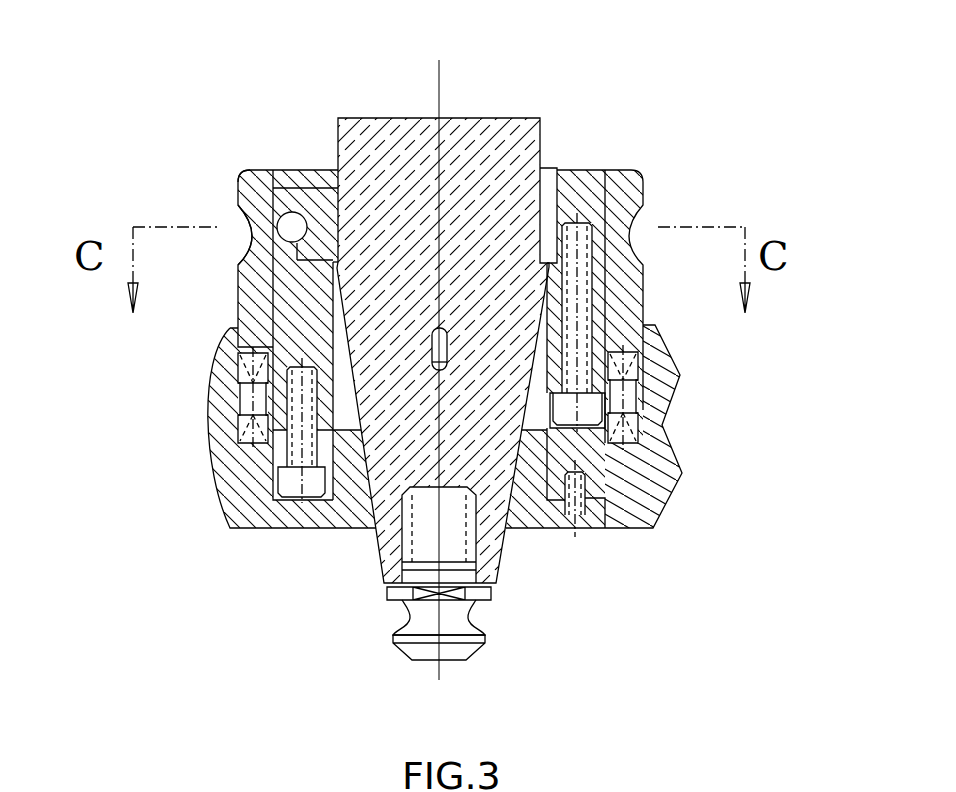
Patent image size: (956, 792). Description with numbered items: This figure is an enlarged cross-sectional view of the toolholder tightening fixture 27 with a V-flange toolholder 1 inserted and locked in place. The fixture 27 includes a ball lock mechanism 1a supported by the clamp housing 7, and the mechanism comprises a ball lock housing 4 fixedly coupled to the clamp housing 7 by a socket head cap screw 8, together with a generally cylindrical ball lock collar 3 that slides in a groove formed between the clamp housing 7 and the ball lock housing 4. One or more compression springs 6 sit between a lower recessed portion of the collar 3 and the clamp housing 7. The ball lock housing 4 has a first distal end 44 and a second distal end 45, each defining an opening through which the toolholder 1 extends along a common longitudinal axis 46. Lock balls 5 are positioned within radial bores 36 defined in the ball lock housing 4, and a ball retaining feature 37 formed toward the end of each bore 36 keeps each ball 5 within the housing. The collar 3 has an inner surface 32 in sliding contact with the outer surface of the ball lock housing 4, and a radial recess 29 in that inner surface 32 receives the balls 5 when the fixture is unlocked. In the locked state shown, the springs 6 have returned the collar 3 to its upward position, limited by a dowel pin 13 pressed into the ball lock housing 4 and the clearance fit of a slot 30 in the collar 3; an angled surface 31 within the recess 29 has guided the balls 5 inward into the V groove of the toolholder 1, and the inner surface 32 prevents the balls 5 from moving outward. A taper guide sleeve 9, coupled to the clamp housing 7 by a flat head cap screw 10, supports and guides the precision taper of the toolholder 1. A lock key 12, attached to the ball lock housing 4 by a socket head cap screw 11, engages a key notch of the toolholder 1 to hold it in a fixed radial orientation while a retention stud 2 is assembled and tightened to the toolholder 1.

The V-flange toolholder 1 is at (460, 128).
The ball lock mechanism 1a is at (238, 175).
The retention stud 2 is at (405, 647).
The ball lock collar 3 is at (632, 183).
The ball lock housing 4 is at (290, 196).
The lock balls 5 is at (290, 227).
The compression springs 6 is at (255, 394).
The clamp housing 7 is at (225, 483).
The socket head cap screw 8 is at (297, 487).
The taper guide sleeve 9 is at (308, 520).
The flat head cap screw 10 is at (582, 520).
The socket head cap screw 11 is at (585, 408).
The lock key 12 is at (580, 183).
The dowel pin 13 is at (500, 318).
The toolholder tightening fixture 27 is at (133, 110).
The radial recess 29 is at (268, 195).
The slot 30 is at (447, 325).
The angled surface 31 is at (267, 214).
The inner surface 32 is at (283, 242).
The radial bores 36 is at (290, 210).
The ball retaining feature 37 is at (300, 212).
The first distal end 44 is at (288, 170).
The second distal end 45 is at (366, 500).
The longitudinal axis 46 is at (439, 667).